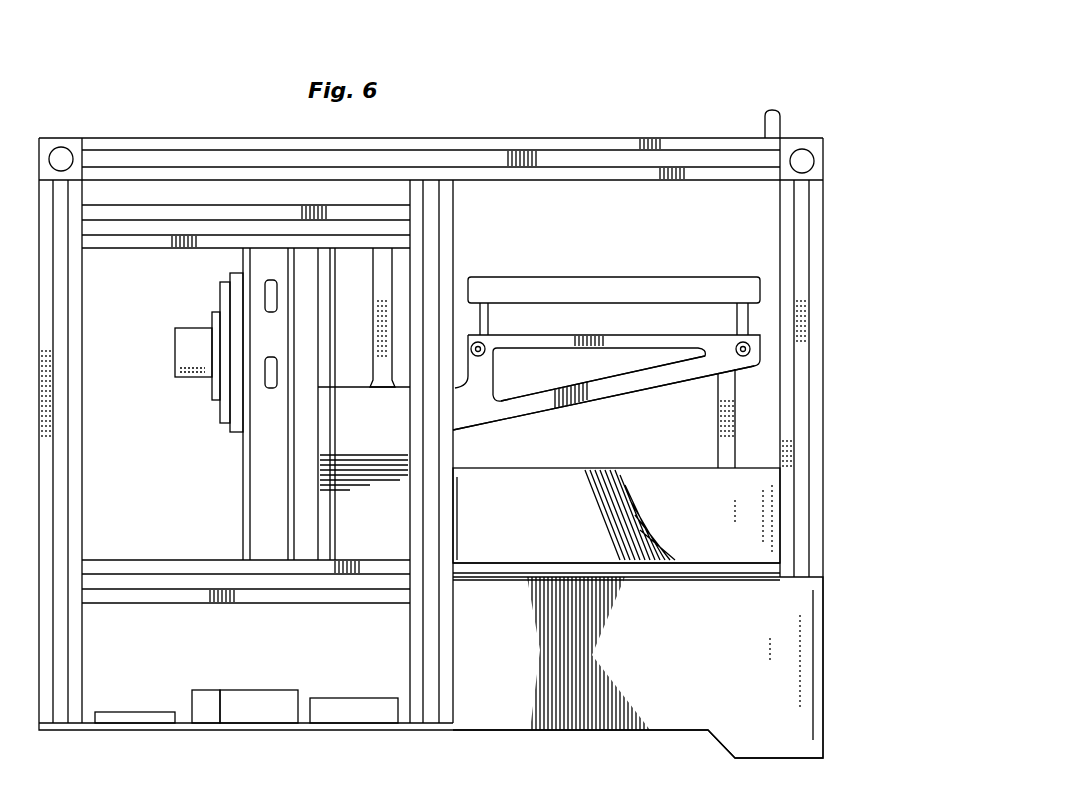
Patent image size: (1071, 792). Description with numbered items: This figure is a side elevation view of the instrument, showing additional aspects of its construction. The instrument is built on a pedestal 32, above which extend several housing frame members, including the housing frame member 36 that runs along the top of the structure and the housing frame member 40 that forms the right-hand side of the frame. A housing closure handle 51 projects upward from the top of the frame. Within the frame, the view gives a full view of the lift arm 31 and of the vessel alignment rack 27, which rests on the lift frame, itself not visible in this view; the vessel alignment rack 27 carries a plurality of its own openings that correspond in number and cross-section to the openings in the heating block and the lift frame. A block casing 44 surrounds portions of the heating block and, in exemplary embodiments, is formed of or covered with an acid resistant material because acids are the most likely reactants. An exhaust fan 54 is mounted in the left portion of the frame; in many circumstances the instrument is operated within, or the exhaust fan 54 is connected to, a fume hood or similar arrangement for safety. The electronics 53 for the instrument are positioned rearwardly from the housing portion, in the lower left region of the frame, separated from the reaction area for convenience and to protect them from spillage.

The housing frame member 36 is at (146, 164).
The housing closure handle 51 is at (771, 111).
The vessel alignment rack 27 is at (620, 294).
The exhaust fan 54 is at (192, 350).
The lift arm 31 is at (610, 388).
The housing frame member 40 is at (808, 406).
The block casing 44 is at (712, 515).
The pedestal 32 is at (712, 670).
The electronics 53 is at (250, 668).